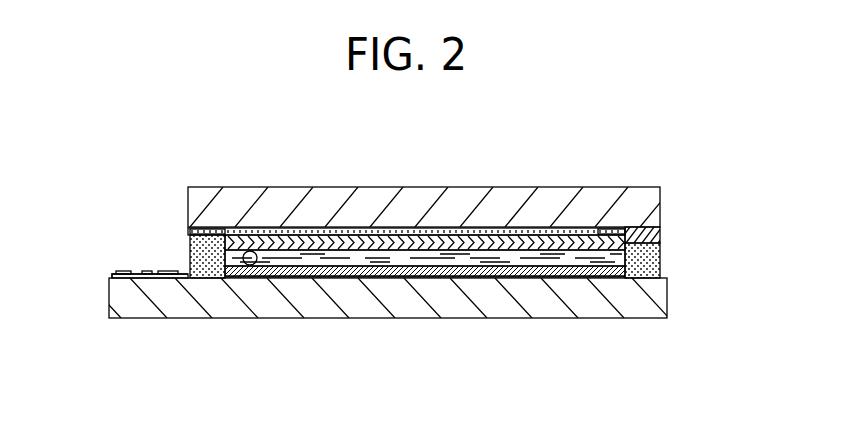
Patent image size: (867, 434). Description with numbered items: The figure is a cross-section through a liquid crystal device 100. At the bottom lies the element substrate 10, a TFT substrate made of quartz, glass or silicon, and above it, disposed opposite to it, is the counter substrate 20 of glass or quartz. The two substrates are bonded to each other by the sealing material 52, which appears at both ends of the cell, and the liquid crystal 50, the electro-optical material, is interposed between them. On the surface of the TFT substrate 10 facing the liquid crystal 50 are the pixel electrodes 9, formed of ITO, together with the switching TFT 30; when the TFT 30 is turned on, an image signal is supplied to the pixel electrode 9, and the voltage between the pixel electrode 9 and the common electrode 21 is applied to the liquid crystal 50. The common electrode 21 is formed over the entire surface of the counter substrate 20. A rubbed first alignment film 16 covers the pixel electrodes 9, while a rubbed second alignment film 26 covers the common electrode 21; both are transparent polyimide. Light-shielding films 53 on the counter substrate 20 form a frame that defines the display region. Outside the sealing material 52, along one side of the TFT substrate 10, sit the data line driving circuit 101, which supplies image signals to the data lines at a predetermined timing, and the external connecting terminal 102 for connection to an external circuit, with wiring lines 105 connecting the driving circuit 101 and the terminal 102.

The liquid crystal device 100 is at (653, 142).
The counter substrate 20 is at (418, 197).
The common electrode 21 is at (345, 228).
The light-shielding film 53 is at (233, 229).
The second alignment film 26 is at (661, 232).
The sealing material 52 is at (188, 228).
The liquid crystal 50 is at (413, 262).
The TFT 30 is at (251, 266).
The pixel electrode 9 is at (347, 277).
The first alignment film 16 is at (628, 276).
The element substrate 10 is at (500, 310).
The data line driving circuit 101 is at (163, 274).
The wiring line 105 is at (148, 274).
The external connecting terminal 102 is at (133, 276).